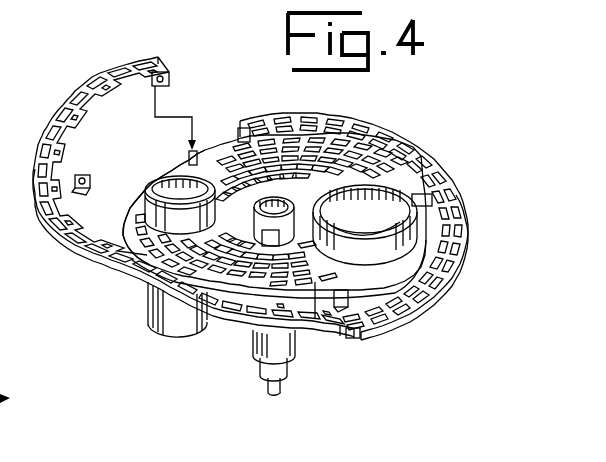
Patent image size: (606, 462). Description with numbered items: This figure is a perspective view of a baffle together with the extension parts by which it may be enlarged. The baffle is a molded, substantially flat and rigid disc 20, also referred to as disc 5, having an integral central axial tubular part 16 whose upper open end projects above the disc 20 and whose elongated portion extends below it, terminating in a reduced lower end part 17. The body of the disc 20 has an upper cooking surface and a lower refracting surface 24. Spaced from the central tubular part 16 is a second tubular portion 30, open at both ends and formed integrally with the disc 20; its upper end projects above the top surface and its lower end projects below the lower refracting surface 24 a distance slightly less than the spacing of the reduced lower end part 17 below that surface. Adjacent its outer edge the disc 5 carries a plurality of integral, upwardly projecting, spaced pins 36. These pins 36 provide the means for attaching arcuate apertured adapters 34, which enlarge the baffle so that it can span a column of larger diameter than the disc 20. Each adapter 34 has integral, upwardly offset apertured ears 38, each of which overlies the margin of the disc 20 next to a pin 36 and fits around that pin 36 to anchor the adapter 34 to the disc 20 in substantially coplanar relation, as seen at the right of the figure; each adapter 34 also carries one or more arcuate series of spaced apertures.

The disc 5 is at (401, 115).
The disc 20 is at (208, 144).
The arcuate apertured adapter 34 is at (118, 37).
The pin 36 is at (189, 158).
The apertured ear 38 is at (84, 178).
The second tubular portion 30 is at (126, 236).
The lower refracting surface 24 is at (236, 323).
The central axial tubular part 16 is at (282, 355).
The reduced lower end part 17 is at (266, 378).